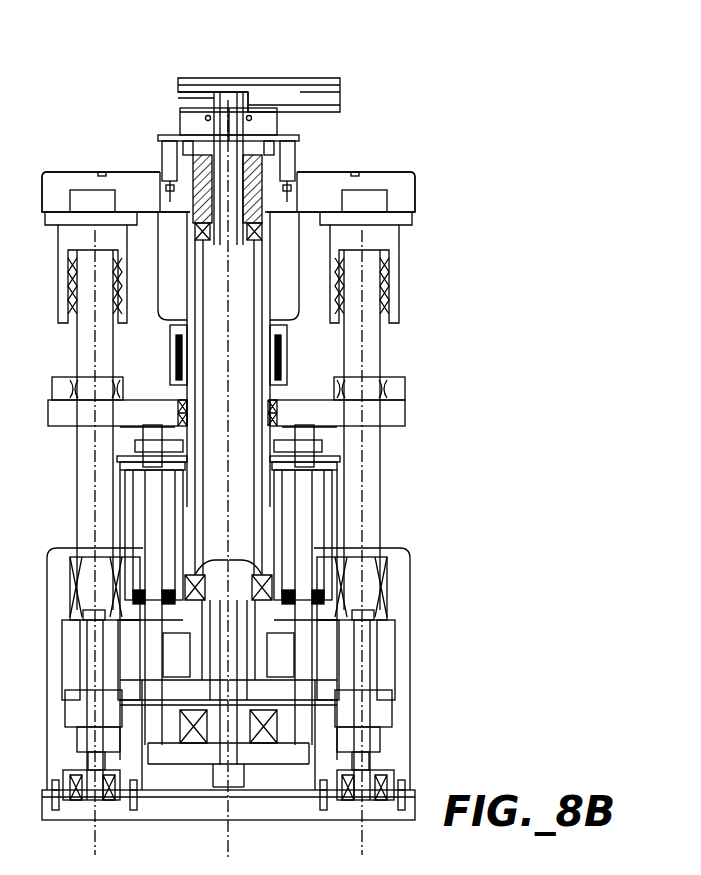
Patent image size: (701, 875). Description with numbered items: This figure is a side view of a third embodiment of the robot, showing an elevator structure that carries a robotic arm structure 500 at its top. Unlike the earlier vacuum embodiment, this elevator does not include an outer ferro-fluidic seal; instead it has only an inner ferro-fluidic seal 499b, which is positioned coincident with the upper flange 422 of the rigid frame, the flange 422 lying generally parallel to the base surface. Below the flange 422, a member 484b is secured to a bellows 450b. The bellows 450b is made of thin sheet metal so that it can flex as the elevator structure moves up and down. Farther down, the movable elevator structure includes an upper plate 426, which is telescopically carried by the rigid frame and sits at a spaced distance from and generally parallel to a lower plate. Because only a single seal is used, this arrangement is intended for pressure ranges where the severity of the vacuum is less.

The robotic arm structure 500 is at (285, 75).
The inner ferro-fluidic seal 499b is at (262, 182).
The flange 422 is at (405, 188).
The member 484b is at (300, 260).
The bellows 450b is at (288, 352).
The upper plate 426 is at (398, 414).